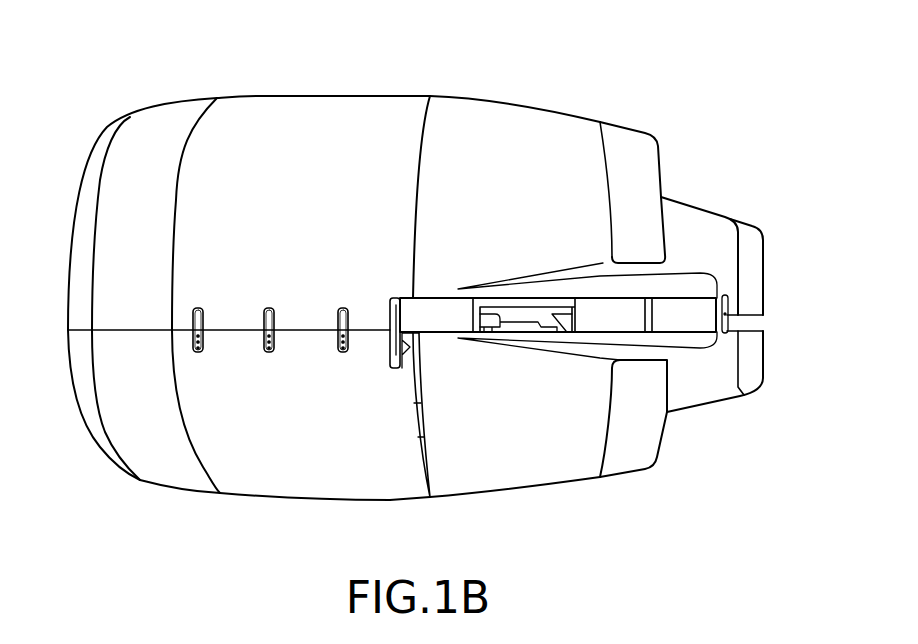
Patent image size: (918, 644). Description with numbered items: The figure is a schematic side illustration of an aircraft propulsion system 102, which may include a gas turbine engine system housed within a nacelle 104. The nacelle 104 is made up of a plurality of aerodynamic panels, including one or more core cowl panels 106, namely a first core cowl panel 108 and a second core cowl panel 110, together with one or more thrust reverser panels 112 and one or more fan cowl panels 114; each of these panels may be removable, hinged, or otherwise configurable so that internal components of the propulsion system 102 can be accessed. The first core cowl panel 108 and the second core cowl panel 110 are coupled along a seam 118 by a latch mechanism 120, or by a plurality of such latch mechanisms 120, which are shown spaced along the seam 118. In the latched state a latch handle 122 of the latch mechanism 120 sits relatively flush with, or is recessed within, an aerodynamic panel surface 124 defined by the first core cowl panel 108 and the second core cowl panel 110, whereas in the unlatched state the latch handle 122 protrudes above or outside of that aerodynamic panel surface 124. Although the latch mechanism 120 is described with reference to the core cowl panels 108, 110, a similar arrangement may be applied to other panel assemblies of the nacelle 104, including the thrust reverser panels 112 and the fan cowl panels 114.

The aircraft propulsion system 102 is at (96, 106).
The nacelle 104 is at (244, 97).
The core cowl panels 106 is at (233, 483).
The first core cowl panel 108 is at (308, 488).
The second core cowl panel 110 is at (330, 100).
The thrust reverser panels 112 is at (525, 482).
The fan cowl panels 114 is at (158, 482).
The seam 118 is at (303, 331).
The latch mechanism 120 is at (270, 286).
The latch handle 122 is at (272, 308).
The aerodynamic panel surface 124 is at (213, 189).